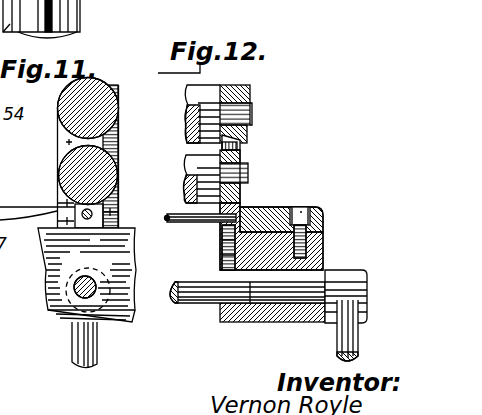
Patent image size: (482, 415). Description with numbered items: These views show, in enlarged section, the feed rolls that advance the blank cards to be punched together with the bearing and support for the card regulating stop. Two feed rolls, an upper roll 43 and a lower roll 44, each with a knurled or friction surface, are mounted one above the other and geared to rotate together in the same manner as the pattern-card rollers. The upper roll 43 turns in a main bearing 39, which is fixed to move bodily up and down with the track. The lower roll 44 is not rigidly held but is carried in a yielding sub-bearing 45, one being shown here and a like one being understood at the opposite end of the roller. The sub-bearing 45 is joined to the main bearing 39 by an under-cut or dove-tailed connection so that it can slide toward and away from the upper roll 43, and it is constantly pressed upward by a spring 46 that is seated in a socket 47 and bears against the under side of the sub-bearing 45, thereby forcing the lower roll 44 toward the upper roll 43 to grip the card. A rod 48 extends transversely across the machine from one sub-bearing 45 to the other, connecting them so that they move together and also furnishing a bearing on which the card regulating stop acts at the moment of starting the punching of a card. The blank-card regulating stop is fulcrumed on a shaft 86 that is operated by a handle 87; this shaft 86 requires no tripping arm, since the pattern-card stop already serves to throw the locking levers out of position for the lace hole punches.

In FIG. 12, the bearing 39 is at (270, 213).
In FIG. 11, the upper feed roll 43 is at (118, 100).
In FIG. 12, the upper feed roll 43 is at (206, 92).
In FIG. 11, the lower feed roll 44 is at (66, 168).
In FIG. 12, the lower feed roll 44 is at (203, 157).
In FIG. 12, the sub-bearing 45 is at (248, 159).
In FIG. 12, the spring 46 is at (222, 238).
In FIG. 12, the socket 47 is at (222, 258).
In FIG. 12, the rod 48 is at (169, 216).
In FIG. 11, the shaft 86 is at (72, 293).
In FIG. 12, the shaft 86 is at (186, 304).
In FIG. 12, the handle 87 is at (350, 280).